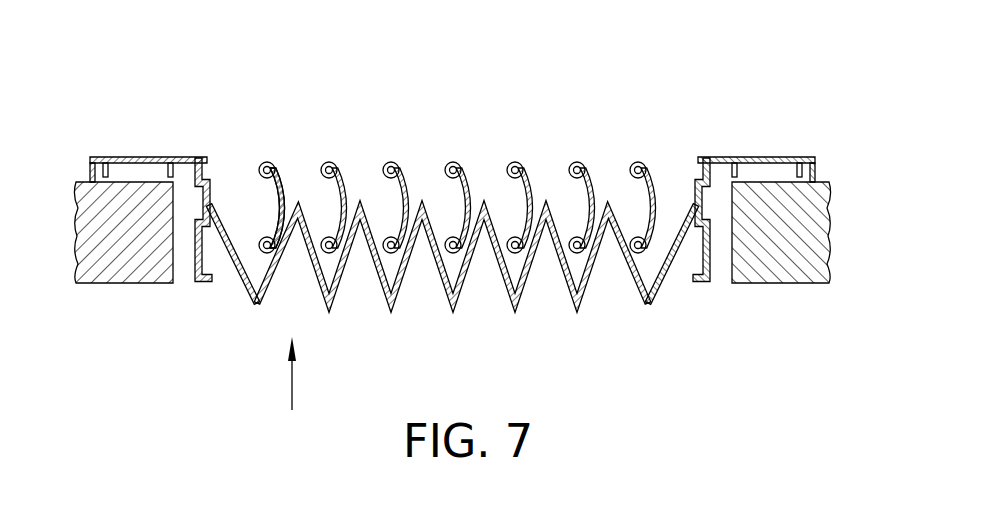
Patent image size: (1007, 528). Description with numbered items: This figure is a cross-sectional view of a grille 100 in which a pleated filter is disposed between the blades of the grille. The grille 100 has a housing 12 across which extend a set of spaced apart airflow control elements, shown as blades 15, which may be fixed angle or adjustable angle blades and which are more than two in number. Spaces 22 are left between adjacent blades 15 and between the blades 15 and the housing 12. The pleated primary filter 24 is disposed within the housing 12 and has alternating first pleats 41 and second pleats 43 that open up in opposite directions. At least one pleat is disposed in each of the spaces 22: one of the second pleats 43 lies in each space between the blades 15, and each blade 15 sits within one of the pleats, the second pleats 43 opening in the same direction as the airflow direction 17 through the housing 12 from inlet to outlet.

The grille 100 is at (754, 132).
The housing 12 is at (199, 173).
The rotatable blades 15 is at (285, 177).
The spaces 22 is at (237, 180).
The pleated primary filter 24 is at (243, 284).
The second pleats 43 is at (386, 299).
The first pleats 41 is at (618, 252).
The airflow direction 17 is at (290, 376).